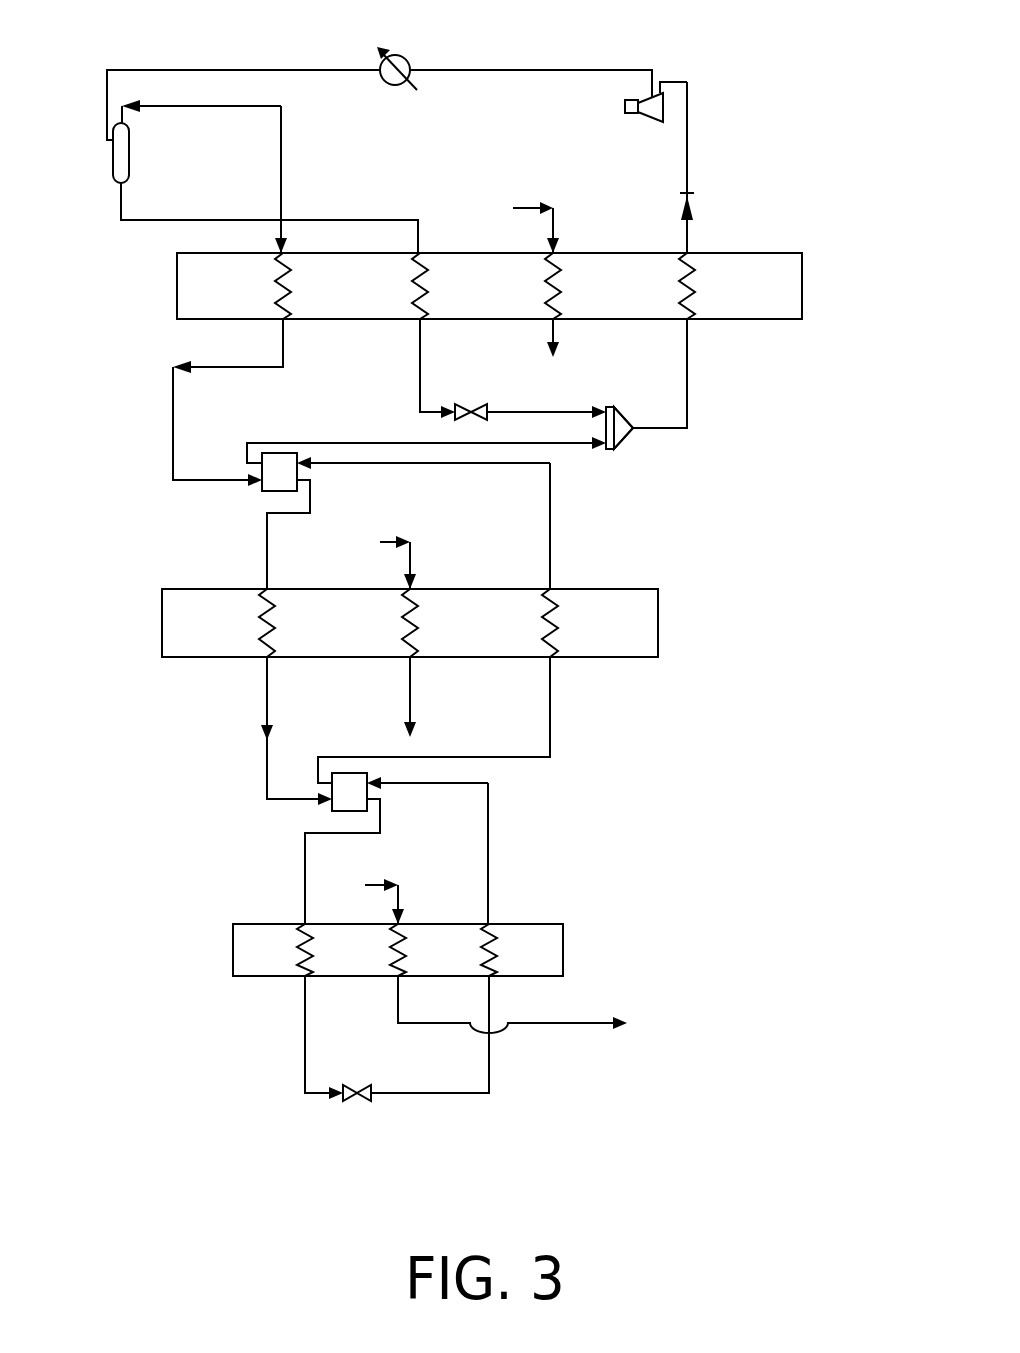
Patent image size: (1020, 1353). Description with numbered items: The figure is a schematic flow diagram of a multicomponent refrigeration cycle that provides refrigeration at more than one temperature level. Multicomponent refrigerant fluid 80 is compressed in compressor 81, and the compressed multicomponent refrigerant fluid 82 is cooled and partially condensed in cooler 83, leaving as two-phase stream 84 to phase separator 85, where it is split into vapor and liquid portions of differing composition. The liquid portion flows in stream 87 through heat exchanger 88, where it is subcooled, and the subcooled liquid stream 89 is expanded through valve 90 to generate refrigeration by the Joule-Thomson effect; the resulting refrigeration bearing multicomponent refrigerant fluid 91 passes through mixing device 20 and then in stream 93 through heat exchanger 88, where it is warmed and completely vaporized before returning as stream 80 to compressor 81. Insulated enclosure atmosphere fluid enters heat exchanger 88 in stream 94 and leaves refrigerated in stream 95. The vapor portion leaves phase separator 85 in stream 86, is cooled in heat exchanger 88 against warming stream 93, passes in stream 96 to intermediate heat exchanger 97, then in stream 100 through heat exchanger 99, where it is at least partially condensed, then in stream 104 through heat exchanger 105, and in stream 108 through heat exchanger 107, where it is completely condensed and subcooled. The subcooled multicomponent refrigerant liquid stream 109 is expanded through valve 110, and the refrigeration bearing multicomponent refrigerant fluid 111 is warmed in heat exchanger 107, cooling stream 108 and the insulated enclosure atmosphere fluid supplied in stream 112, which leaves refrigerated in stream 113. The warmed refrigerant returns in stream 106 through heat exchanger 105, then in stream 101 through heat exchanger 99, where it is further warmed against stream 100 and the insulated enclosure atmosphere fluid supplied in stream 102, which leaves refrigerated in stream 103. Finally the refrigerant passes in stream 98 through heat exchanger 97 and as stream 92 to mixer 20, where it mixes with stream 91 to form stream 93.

The mixing device 20 is at (636, 400).
The multicomponent refrigerant fluid 80 is at (687, 158).
The compressor 81 is at (624, 106).
The compressed multicomponent refrigerant fluid 82 is at (515, 70).
The cooler 83 is at (408, 52).
The stream 84 is at (215, 70).
The phase separator 85 is at (129, 160).
The stream 86 is at (281, 157).
The stream 87 is at (137, 220).
The heat exchanger 88 is at (802, 291).
The subcooled liquid stream 89 is at (420, 345).
The valve 90 is at (470, 403).
The refrigeration bearing multicomponent refrigerant fluid 91 is at (528, 412).
The stream 92 is at (340, 443).
The stream 93 is at (687, 418).
The stream 94 is at (553, 220).
The stream 95 is at (553, 330).
The stream 96 is at (173, 407).
The intermediate heat exchanger 97 is at (252, 500).
The stream 98 is at (375, 463).
The heat exchanger 99 is at (658, 628).
The stream 100 is at (267, 560).
The stream 101 is at (550, 715).
The stream 102 is at (410, 552).
The stream 103 is at (410, 685).
The stream 104 is at (267, 710).
The heat exchanger 105 is at (322, 820).
The stream 106 is at (488, 845).
The heat exchanger 107 is at (563, 953).
The stream 108 is at (305, 880).
The subcooled multicomponent refrigerant liquid stream 109 is at (305, 1013).
The valve 110 is at (357, 1085).
The refrigeration bearing multicomponent refrigerant fluid 111 is at (438, 1108).
The stream 112 is at (398, 900).
The stream 113 is at (398, 1003).